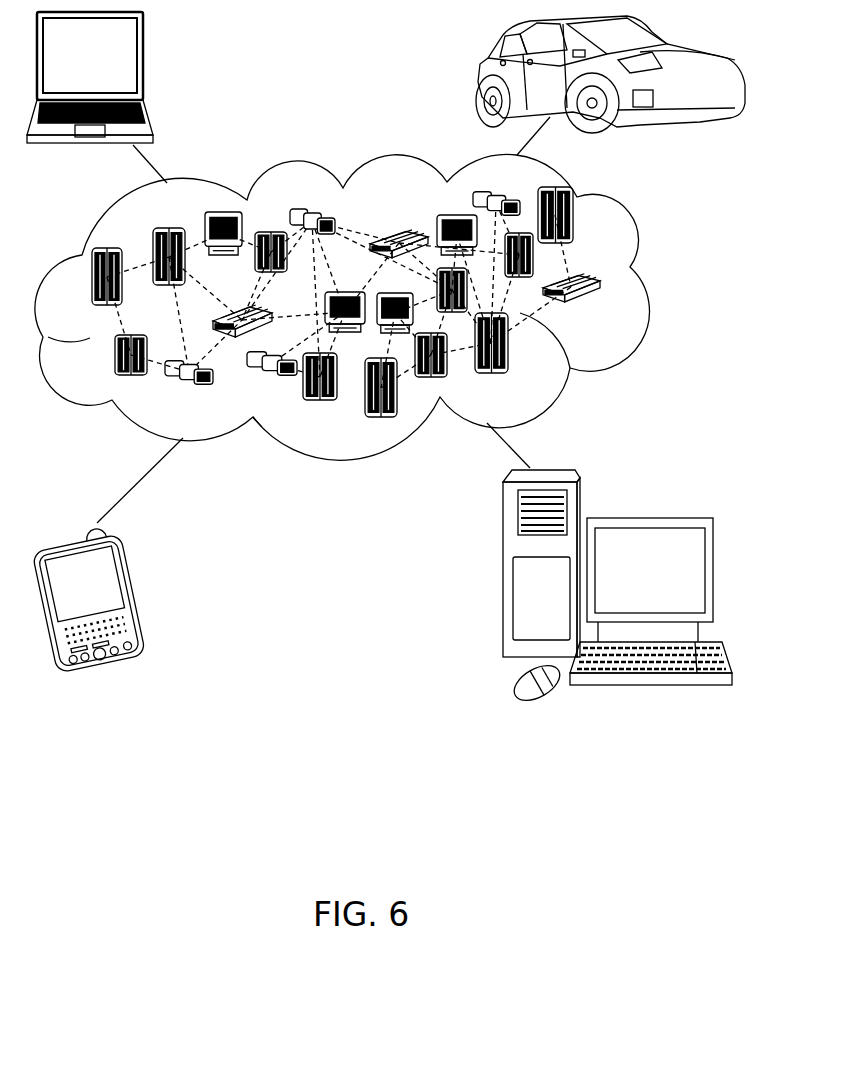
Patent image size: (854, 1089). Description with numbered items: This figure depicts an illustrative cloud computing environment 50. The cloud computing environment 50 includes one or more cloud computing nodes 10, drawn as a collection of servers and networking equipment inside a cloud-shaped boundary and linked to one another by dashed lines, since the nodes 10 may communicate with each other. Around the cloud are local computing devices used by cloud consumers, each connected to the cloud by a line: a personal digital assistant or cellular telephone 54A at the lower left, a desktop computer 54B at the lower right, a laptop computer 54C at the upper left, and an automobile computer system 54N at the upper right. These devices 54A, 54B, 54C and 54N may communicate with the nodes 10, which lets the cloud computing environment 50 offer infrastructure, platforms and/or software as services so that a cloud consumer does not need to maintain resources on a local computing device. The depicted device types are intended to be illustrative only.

The cloud computing nodes 10 is at (387, 302).
The cloud computing environment 50 is at (647, 288).
The personal digital assistant or cellular telephone 54A is at (137, 593).
The desktop computer 54B is at (647, 518).
The laptop computer 54C is at (143, 63).
The automobile computer system 54N is at (482, 80).